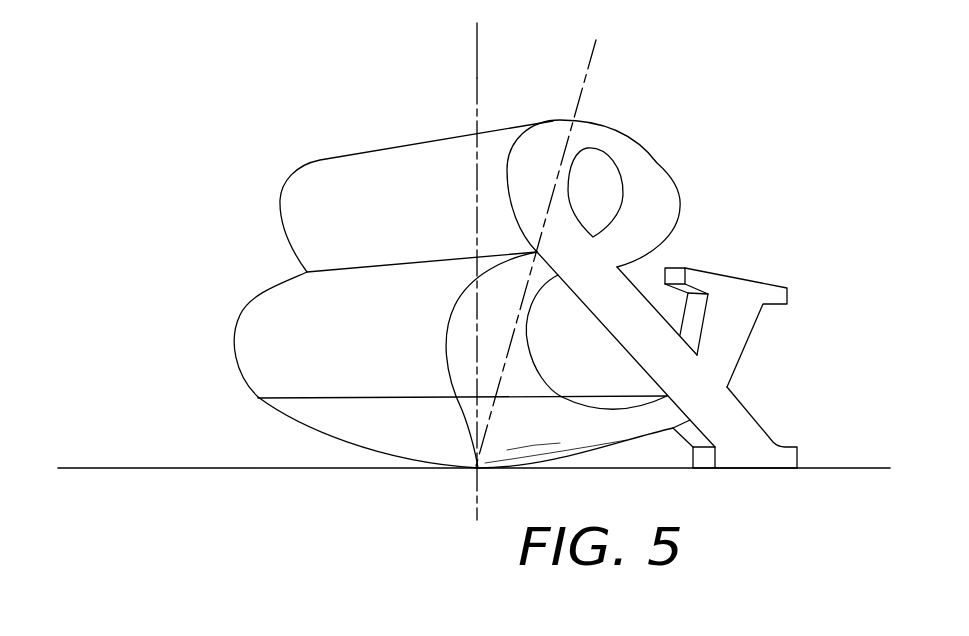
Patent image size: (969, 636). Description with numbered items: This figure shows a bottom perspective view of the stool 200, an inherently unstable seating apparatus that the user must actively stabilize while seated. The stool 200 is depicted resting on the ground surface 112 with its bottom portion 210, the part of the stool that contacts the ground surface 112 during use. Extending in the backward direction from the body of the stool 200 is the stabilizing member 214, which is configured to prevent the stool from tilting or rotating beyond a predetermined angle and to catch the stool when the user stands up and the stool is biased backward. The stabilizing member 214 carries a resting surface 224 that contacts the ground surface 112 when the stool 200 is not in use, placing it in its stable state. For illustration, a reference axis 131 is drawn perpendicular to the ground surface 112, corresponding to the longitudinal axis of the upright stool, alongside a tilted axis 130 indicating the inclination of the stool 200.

The ground surface 112 is at (172, 467).
The tilted center axis of the character 130 is at (591, 69).
The reference axis 131 is at (476, 76).
The stool 200 is at (746, 193).
The bottom portion 210 is at (402, 448).
The stabilizing member 214 is at (779, 446).
The resting surface 224 is at (747, 469).